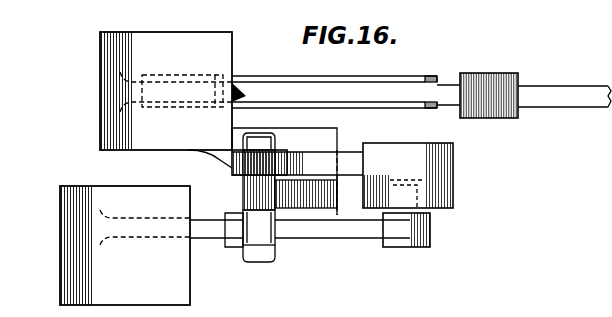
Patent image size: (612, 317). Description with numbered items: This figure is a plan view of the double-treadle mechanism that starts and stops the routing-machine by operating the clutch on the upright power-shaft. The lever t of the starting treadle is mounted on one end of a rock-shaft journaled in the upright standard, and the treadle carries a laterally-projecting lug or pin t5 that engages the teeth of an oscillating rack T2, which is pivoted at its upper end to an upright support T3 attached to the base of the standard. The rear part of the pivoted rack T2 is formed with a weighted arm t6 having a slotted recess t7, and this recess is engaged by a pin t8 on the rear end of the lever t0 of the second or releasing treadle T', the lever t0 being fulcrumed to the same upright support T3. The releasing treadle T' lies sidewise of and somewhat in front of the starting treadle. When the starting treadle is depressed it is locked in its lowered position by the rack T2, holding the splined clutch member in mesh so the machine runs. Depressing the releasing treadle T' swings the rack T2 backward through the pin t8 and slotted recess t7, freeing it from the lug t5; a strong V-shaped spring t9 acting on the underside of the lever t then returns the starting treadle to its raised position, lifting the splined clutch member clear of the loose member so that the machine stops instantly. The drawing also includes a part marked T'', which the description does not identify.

The releasing treadle T' is at (143, 91).
The lower block / bearing T'' is at (104, 245).
The oscillating rack T2 is at (245, 162).
The upright support T3 is at (256, 196).
The lever t is at (575, 90).
The lever t0 is at (334, 230).
The laterally-projecting lug or pin t5 is at (232, 153).
The weighted arm t6 is at (319, 180).
The slotted recess t7 is at (425, 197).
The pin t8 is at (410, 203).
The V-shaped spring t9 is at (192, 78).